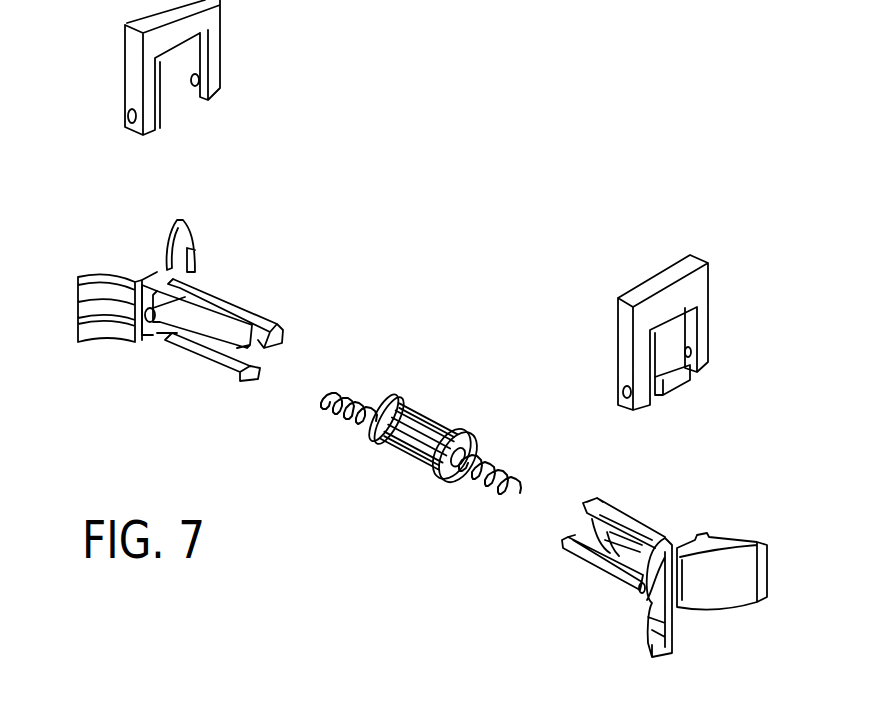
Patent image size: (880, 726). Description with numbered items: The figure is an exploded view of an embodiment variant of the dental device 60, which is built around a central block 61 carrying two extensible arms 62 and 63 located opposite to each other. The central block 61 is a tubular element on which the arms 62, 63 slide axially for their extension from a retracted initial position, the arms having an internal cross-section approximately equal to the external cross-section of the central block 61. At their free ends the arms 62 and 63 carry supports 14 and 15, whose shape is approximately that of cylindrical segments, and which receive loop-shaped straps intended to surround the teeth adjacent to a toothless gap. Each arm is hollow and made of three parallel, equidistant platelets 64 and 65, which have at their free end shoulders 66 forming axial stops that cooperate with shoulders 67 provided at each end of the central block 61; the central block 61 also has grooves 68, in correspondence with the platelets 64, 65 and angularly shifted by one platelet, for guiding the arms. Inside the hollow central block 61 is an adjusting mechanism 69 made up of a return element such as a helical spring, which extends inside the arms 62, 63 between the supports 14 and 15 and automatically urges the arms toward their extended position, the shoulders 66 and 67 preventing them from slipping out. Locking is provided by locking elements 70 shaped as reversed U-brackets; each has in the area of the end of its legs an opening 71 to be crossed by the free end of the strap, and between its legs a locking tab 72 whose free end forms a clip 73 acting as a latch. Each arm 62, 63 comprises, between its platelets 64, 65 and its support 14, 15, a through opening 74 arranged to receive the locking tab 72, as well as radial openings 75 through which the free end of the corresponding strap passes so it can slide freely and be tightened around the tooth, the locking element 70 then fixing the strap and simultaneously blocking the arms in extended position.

The support 14 is at (108, 277).
The support 15 is at (737, 576).
The dental device 60 is at (415, 232).
The central block 61 is at (433, 403).
The extensible arm 62 is at (239, 290).
The extensible arm 63 is at (627, 497).
The platelets 64 is at (197, 325).
The platelets 65 is at (623, 557).
The shoulders 66 is at (208, 372).
The shoulders 67 is at (399, 397).
The grooves 68 is at (412, 451).
The adjusting mechanism 69 is at (327, 398).
The locking element 70 is at (218, 5).
The opening 71 is at (200, 86).
The locking tab 72 is at (168, 79).
The clip 73 is at (703, 364).
The through opening 74 is at (167, 270).
The radial openings 75 is at (137, 338).